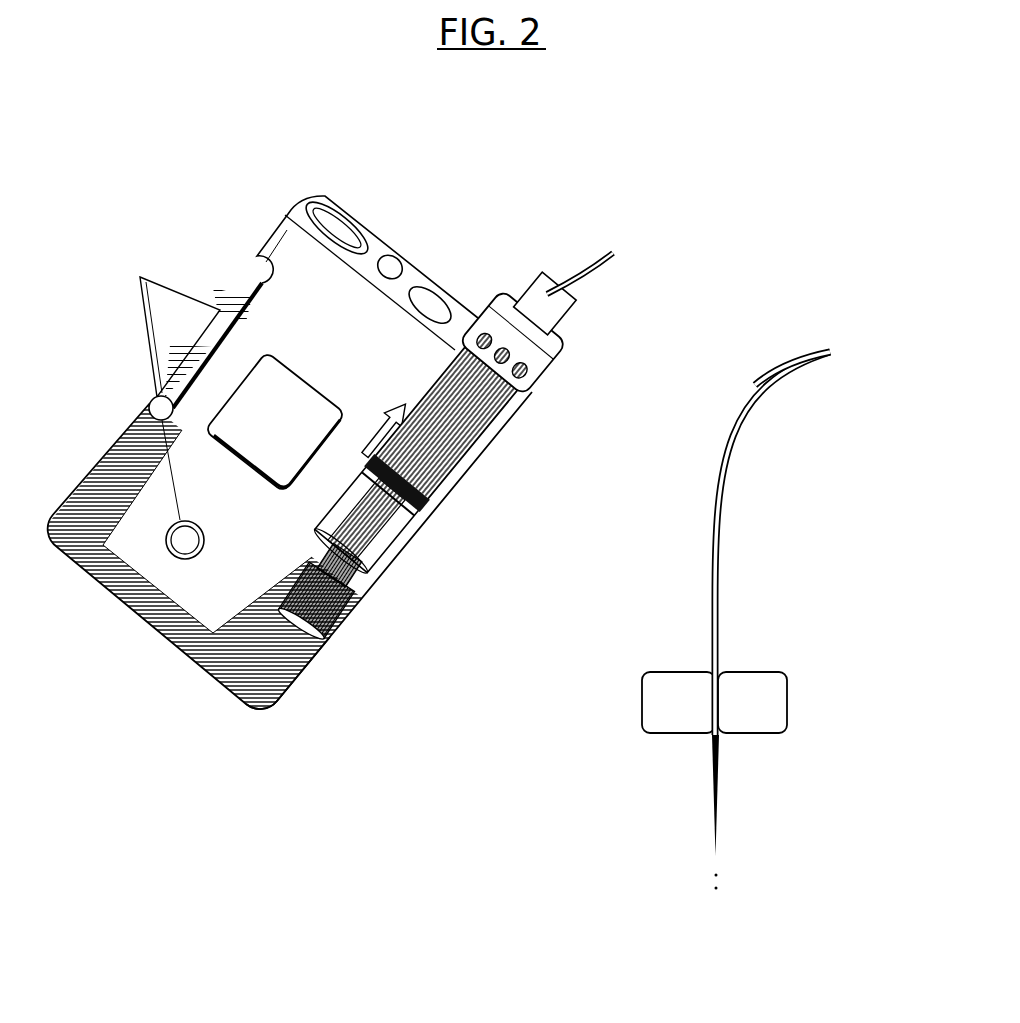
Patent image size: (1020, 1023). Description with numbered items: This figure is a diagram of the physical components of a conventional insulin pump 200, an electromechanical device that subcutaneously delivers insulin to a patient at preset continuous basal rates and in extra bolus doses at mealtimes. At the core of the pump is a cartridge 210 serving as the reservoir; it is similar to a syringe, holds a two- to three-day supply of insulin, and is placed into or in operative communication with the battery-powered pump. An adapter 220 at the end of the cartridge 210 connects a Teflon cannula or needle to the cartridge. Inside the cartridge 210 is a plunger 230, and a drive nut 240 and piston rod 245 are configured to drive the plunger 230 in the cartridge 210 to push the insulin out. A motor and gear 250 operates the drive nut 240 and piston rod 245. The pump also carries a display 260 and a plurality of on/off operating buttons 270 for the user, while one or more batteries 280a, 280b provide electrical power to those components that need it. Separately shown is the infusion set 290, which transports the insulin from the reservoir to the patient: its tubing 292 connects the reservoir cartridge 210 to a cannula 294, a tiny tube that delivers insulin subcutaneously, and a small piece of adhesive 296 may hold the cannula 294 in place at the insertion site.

The insulin pump 200 is at (309, 125).
The cartridge 210 is at (457, 440).
The adapter 220 is at (527, 380).
The plunger 230 is at (403, 537).
The drive nut 240 is at (353, 603).
The piston rod 245 is at (295, 690).
The motor and gear 250 is at (183, 665).
The display 260 is at (283, 370).
The on/off operating buttons 270 is at (160, 374).
The battery 280a is at (333, 212).
The battery 280b is at (404, 254).
The infusion set 290 is at (723, 584).
The tubing 292 is at (792, 350).
The cannula 294 is at (718, 835).
The adhesive 296 is at (640, 702).